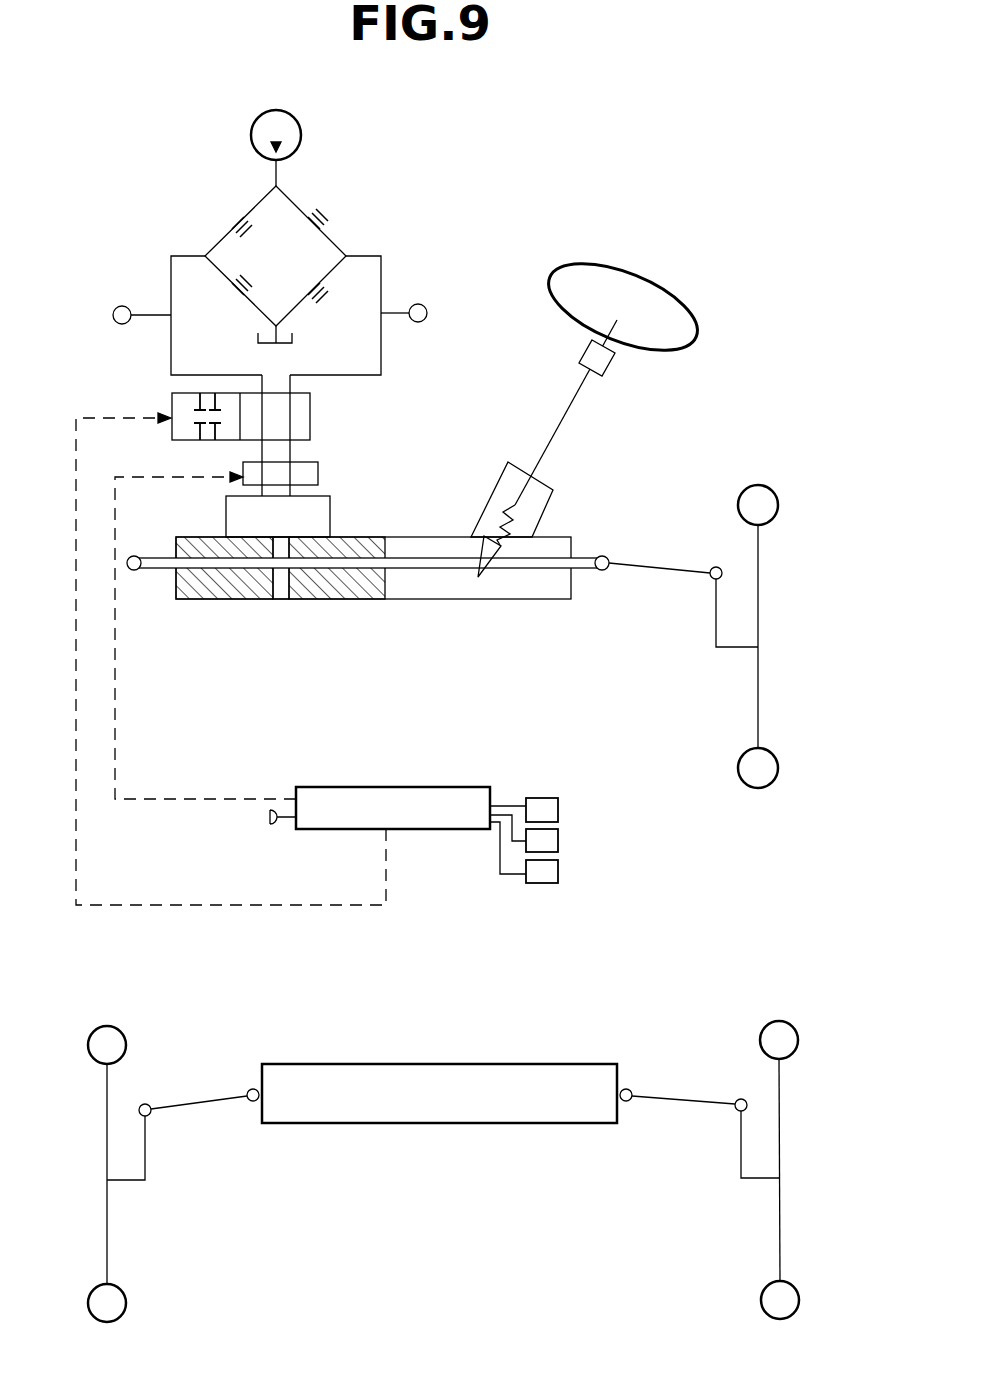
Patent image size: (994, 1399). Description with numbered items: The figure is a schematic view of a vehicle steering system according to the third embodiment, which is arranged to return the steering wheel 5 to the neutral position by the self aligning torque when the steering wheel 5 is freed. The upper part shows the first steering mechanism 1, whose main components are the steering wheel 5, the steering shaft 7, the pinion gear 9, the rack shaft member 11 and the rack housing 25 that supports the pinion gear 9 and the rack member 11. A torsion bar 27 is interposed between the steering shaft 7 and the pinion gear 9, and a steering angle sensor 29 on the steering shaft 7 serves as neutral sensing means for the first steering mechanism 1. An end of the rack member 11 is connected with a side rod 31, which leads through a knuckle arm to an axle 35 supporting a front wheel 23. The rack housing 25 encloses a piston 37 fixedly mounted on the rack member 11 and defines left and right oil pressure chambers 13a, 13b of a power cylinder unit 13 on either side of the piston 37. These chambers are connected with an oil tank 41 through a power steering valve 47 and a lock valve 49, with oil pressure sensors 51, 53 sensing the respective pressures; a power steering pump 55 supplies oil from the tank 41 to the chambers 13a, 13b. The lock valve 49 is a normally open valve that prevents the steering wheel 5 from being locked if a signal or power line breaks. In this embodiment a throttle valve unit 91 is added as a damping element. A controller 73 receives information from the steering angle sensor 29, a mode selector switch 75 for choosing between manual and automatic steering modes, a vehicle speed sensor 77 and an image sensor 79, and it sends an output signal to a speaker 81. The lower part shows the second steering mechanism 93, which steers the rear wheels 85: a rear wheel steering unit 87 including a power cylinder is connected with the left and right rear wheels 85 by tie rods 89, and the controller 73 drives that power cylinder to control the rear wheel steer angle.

The first steering mechanism 1 is at (618, 350).
The steering wheel 5 is at (612, 264).
The steering shaft 7 is at (551, 437).
The pinion gear 9 is at (480, 550).
The rack shaft member 11 is at (592, 552).
The power cylinder unit 13 is at (272, 614).
The left oil pressure chamber 13a is at (233, 599).
The right oil pressure chamber 13b is at (340, 599).
The front wheel 23 is at (760, 717).
The rack housing 25 is at (407, 537).
The torsion bar 27 is at (494, 510).
The steering angle sensor 29 is at (610, 370).
The side rod 31 is at (661, 570).
The axle 35 is at (722, 649).
The piston 37 is at (281, 599).
The oil tank 41 is at (292, 336).
The power steering valve 47 is at (290, 196).
The lock valve 49 is at (312, 412).
The oil pressure sensor 51 is at (122, 305).
The oil pressure sensor 53 is at (418, 304).
The power steering pump 55 is at (250, 133).
The controller 73 is at (403, 787).
The mode selector switch 75 is at (558, 806).
The vehicle speed sensor 77 is at (558, 840).
The image sensor 79 is at (558, 872).
The speaker 81 is at (268, 819).
The rear wheels 85 is at (126, 1041).
The rear wheel steering unit 87 is at (573, 1123).
The tie rods 89 is at (207, 1104).
The throttle valve unit 91 is at (318, 469).
The second steering mechanism 93 is at (473, 1145).